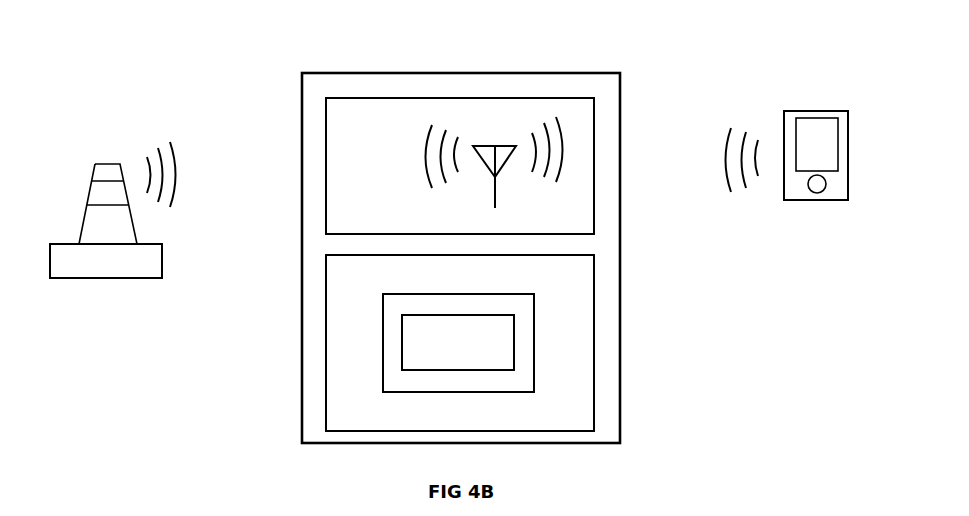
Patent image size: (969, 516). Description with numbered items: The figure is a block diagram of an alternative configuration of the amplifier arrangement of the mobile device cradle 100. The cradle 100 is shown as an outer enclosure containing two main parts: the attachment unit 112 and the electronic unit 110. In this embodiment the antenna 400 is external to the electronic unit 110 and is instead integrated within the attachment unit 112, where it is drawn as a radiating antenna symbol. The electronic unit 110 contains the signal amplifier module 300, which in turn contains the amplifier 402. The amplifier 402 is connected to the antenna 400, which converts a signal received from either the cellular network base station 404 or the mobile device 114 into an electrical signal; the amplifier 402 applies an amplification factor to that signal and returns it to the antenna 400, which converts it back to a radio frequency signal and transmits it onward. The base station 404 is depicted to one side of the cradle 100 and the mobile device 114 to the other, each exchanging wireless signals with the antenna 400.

The mobile device cradle 100 is at (512, 70).
The attachment unit 112 is at (551, 98).
The antenna 400 is at (506, 165).
The electronic unit 110 is at (595, 360).
The signal amplifier module 300 is at (535, 365).
The amplifier 402 is at (490, 369).
The cellular network base station 404 is at (107, 280).
The mobile device 114 is at (816, 205).